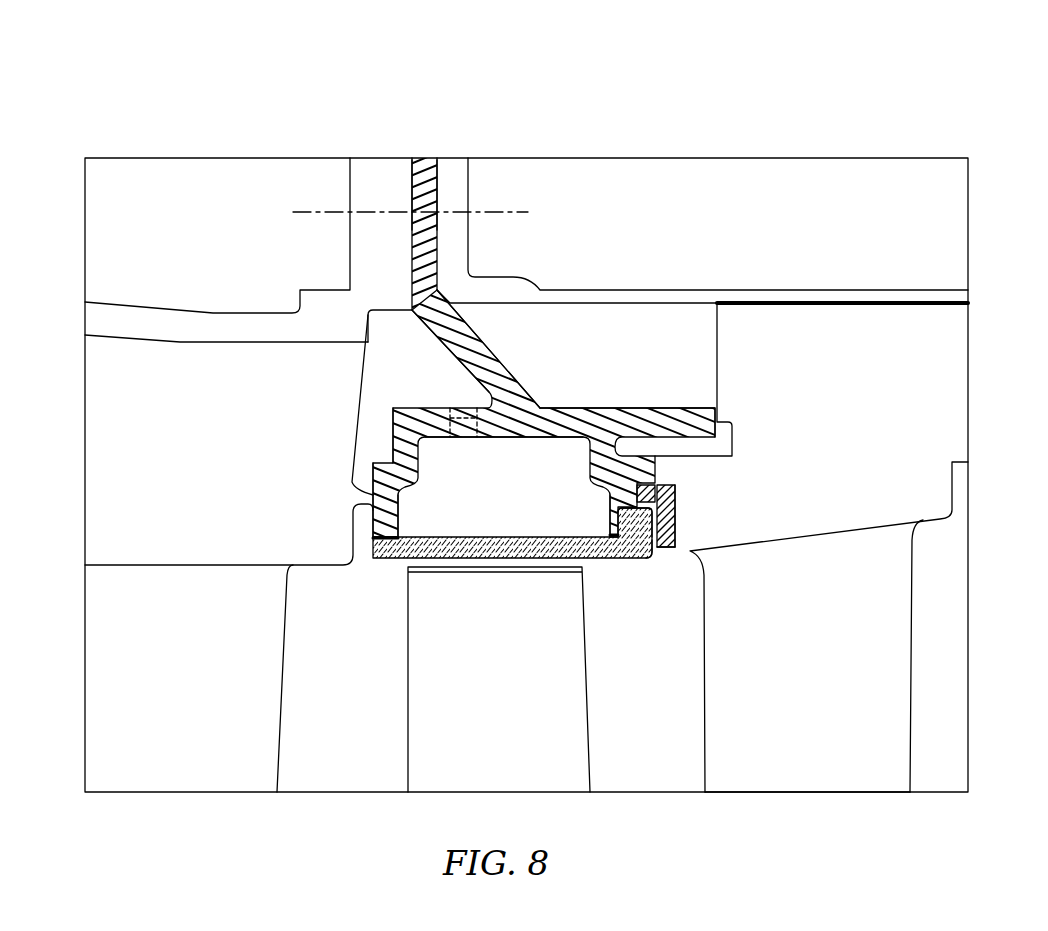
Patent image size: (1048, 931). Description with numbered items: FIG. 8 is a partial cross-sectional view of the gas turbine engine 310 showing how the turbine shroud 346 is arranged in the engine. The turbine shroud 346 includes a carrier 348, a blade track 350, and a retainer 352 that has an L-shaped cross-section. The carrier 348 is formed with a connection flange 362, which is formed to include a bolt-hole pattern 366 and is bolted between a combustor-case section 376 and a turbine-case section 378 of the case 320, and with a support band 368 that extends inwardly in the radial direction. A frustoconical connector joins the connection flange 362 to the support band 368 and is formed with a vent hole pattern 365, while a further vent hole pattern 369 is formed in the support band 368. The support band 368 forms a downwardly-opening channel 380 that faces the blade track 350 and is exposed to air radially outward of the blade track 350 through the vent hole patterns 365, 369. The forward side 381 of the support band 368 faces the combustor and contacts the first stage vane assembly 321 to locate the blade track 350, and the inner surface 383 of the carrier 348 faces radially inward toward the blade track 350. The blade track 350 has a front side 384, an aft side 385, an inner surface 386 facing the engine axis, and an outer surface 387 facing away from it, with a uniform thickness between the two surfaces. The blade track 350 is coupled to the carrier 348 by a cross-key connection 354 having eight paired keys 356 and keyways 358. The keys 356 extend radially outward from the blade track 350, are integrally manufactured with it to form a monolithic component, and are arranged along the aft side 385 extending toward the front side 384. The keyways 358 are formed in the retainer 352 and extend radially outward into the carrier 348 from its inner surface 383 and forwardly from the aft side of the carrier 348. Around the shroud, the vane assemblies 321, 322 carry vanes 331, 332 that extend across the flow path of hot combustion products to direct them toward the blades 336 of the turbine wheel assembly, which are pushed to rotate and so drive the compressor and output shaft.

The gas turbine engine 310 is at (142, 126).
The case 320 is at (801, 289).
The first stage vane assembly 321 is at (162, 372).
The second stage vane assembly 322 is at (830, 360).
The vanes 331 is at (252, 730).
The vanes 332 is at (869, 738).
The blades 336 is at (421, 765).
The turbine shroud 346 is at (561, 340).
The carrier 348 is at (514, 357).
The blade track 350 is at (388, 566).
The retainer 352 is at (690, 534).
The cross-key connection 354 is at (650, 486).
The keys 356 is at (668, 517).
The keyways 358 is at (650, 558).
The connection flange 362 is at (448, 183).
The vent hole pattern 365 is at (458, 335).
The bolt-hole pattern 366 is at (433, 229).
The support band 368 is at (578, 404).
The vent hole pattern 369 is at (473, 437).
The combustor-case section 376 is at (122, 322).
The turbine-case section 378 is at (918, 289).
The downwardly-opening channel 380 is at (521, 462).
The forward side 381 is at (373, 490).
The inner surface 383 is at (610, 512).
The front side 384 is at (373, 548).
The aft side 385 is at (660, 560).
The inner surface 386 is at (630, 536).
The outer surface 387 is at (432, 537).